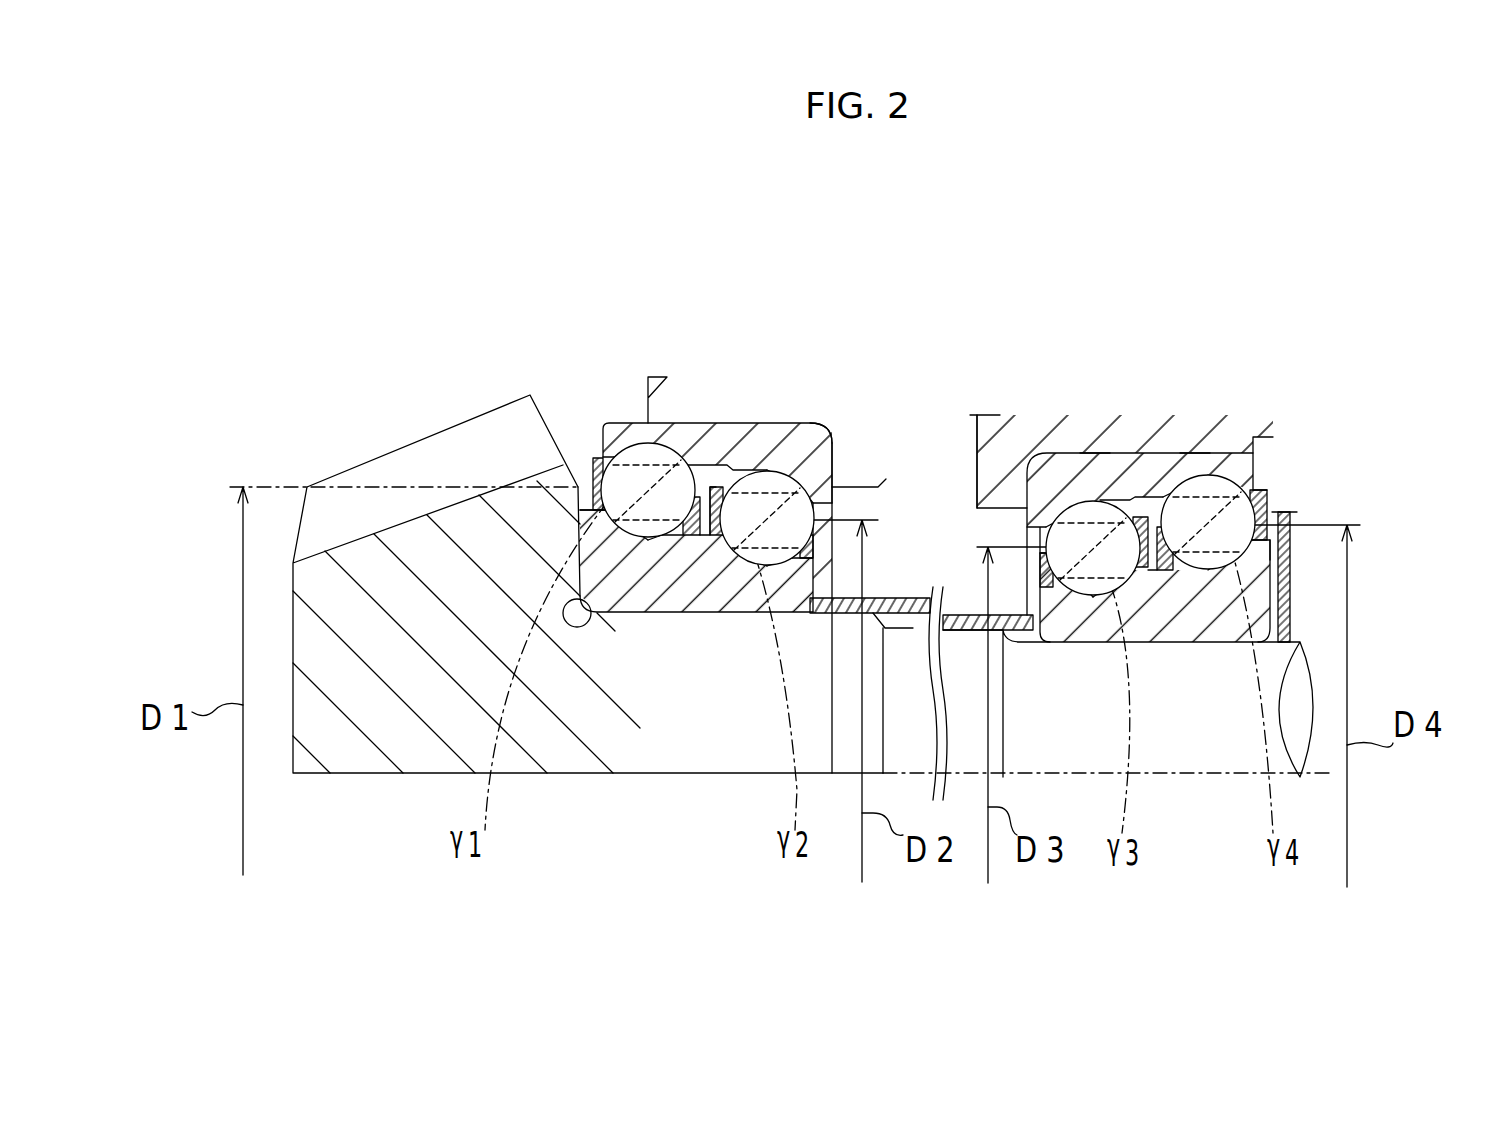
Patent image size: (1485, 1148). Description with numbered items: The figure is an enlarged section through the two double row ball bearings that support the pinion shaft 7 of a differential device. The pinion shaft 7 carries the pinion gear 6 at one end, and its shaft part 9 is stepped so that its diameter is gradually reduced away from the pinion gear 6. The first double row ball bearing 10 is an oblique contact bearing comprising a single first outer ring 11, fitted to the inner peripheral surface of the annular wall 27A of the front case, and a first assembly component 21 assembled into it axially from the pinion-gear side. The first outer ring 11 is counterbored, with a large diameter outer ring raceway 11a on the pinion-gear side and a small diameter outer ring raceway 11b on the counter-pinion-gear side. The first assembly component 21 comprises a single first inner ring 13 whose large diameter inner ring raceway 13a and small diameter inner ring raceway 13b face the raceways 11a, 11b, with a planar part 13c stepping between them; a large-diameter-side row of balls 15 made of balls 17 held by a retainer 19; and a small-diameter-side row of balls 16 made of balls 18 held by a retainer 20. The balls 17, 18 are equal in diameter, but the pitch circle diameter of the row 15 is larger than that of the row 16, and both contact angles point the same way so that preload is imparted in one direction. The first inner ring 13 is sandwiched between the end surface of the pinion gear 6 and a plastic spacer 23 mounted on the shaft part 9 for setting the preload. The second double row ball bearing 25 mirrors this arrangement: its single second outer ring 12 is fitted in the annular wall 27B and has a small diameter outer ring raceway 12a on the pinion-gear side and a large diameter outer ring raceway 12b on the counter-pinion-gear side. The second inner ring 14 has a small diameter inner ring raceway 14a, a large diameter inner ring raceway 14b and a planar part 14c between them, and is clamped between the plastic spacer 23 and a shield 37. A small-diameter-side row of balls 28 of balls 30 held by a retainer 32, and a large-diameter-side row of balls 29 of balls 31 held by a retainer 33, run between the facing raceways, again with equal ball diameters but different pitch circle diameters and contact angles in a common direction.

The pinion gear 6 is at (397, 442).
The pinion shaft 7 is at (715, 791).
The shaft part 9 is at (1140, 765).
The first double row ball bearing 10 is at (757, 407).
The first outer ring 11 is at (835, 455).
The large diameter outer ring raceway 11a is at (627, 437).
The small diameter outer ring raceway 11b is at (790, 450).
The second outer ring 12 is at (1245, 452).
The small diameter outer ring raceway 12a is at (1092, 470).
The large diameter outer ring raceway 12b is at (1196, 470).
The first inner ring 13 is at (700, 613).
The large diameter inner ring raceway 13a is at (617, 560).
The small diameter inner ring raceway 13b is at (727, 565).
The planar part 13c is at (667, 626).
The second inner ring 14 is at (1190, 615).
The small diameter inner ring raceway 14a is at (1107, 600).
The large diameter inner ring raceway 14b is at (1215, 595).
The planar part 14c is at (1150, 590).
The large-diameter-side row of balls 15 is at (716, 445).
The small-diameter-side row of balls 16 is at (807, 440).
The ball 17 is at (690, 452).
The ball 18 is at (858, 475).
The retainer 19 is at (603, 450).
The retainer 20 is at (770, 590).
The first assembly component 21 is at (622, 613).
The plastic spacer 23 is at (897, 597).
The second double row ball bearing 25 is at (1145, 436).
The annular wall 27A is at (841, 399).
The annular wall 27B is at (1015, 419).
The small-diameter-side row of balls 28 is at (1087, 481).
The large-diameter-side row of balls 29 is at (1216, 463).
The ball 30 is at (1040, 537).
The ball 31 is at (1283, 593).
The retainer 32 is at (1058, 590).
The retainer 33 is at (1268, 498).
The shield 37 is at (1303, 522).